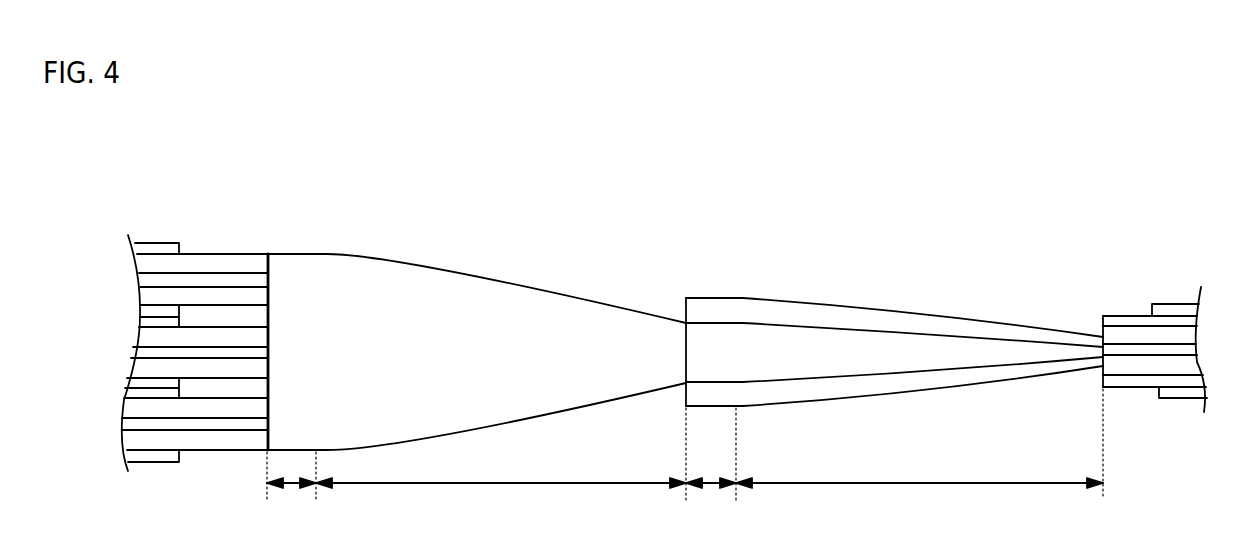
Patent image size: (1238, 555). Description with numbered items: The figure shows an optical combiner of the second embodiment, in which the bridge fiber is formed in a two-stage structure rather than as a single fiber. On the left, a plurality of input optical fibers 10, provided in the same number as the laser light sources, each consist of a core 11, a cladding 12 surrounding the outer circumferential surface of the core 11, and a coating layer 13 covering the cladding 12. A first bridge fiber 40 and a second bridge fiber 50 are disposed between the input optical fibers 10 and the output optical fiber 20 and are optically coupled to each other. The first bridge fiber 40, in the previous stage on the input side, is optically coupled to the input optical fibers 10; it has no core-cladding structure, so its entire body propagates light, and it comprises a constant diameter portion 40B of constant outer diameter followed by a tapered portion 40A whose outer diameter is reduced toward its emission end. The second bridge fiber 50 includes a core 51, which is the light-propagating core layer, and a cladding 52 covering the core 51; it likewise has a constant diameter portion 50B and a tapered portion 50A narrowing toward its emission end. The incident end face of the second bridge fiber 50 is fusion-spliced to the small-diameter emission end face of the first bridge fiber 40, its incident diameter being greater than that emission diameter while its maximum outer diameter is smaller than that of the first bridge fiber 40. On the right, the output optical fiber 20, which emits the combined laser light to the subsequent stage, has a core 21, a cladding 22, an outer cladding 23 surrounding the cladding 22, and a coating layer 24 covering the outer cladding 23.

The input optical fiber 10 is at (103, 281).
The core 11 is at (235, 278).
The cladding 12 is at (195, 260).
The coating layer 13 is at (155, 250).
The output optical fiber 20 is at (1153, 422).
The core 21 is at (1111, 350).
The cladding 22 is at (1137, 335).
The outer cladding 23 is at (1164, 320).
The coating layer 24 is at (1190, 308).
The first bridge fiber 40 is at (472, 288).
The tapered portion 40A is at (498, 487).
The constant diameter portion 40B is at (293, 487).
The second bridge fiber 50 is at (848, 256).
The tapered portion 50A is at (915, 487).
The constant diameter portion 50B is at (712, 487).
The core 51 is at (895, 342).
The cladding 52 is at (853, 318).